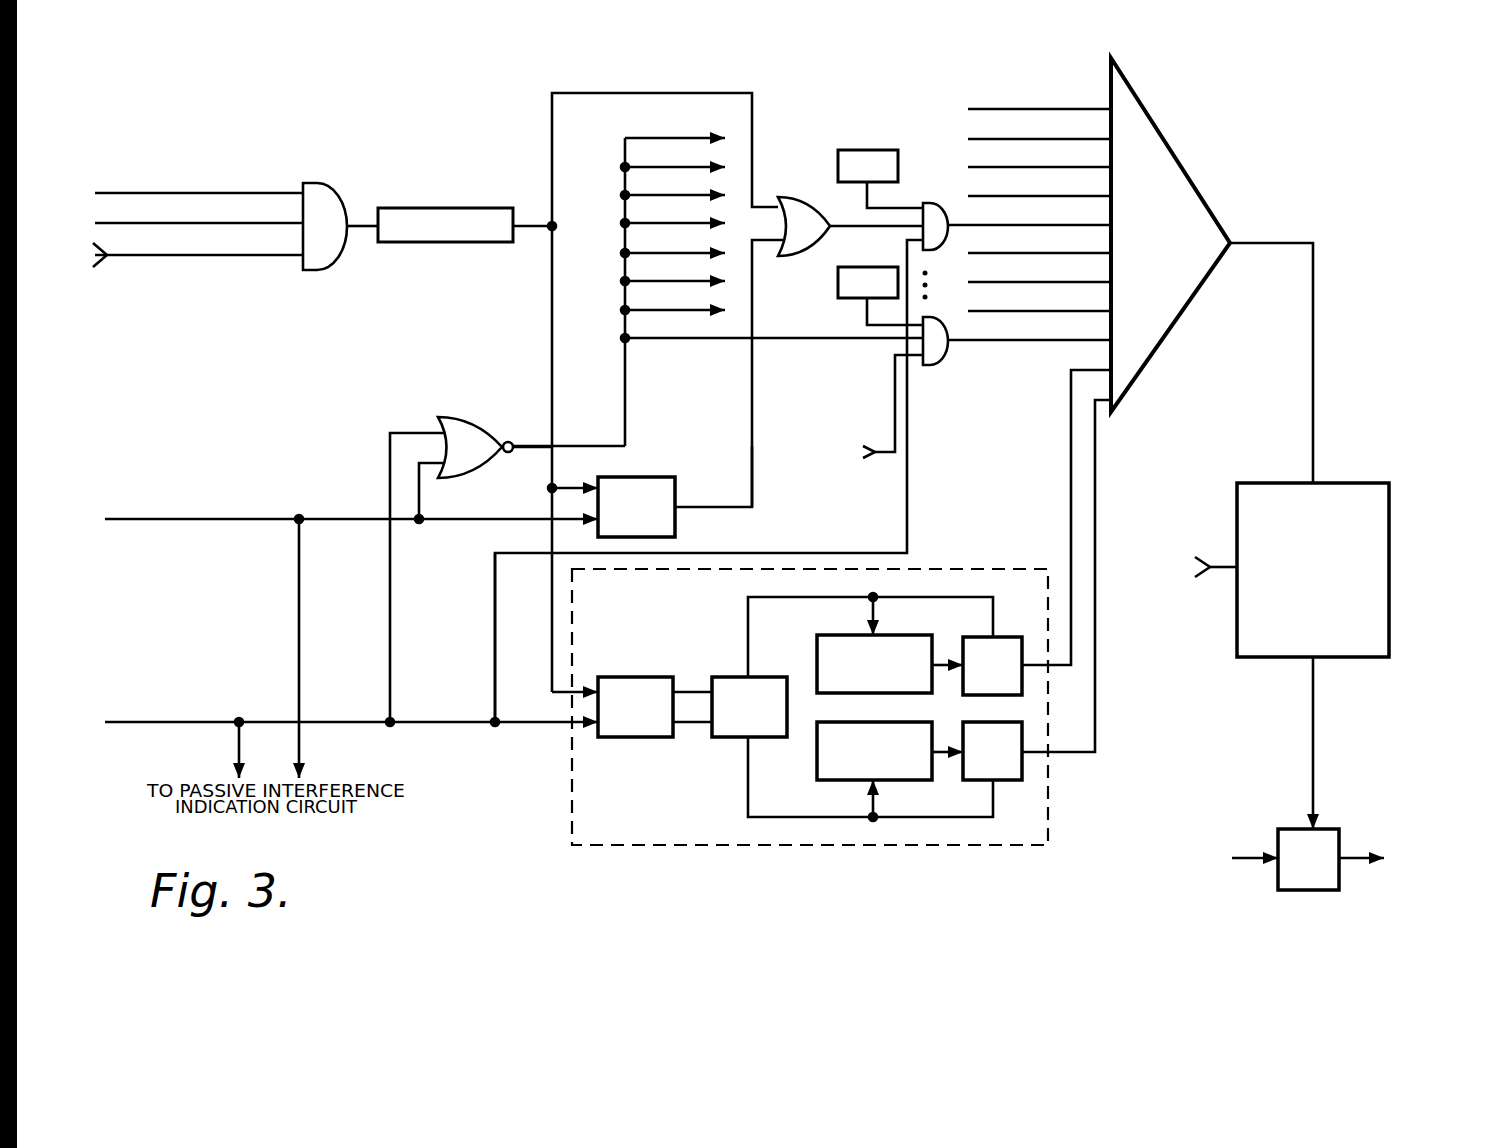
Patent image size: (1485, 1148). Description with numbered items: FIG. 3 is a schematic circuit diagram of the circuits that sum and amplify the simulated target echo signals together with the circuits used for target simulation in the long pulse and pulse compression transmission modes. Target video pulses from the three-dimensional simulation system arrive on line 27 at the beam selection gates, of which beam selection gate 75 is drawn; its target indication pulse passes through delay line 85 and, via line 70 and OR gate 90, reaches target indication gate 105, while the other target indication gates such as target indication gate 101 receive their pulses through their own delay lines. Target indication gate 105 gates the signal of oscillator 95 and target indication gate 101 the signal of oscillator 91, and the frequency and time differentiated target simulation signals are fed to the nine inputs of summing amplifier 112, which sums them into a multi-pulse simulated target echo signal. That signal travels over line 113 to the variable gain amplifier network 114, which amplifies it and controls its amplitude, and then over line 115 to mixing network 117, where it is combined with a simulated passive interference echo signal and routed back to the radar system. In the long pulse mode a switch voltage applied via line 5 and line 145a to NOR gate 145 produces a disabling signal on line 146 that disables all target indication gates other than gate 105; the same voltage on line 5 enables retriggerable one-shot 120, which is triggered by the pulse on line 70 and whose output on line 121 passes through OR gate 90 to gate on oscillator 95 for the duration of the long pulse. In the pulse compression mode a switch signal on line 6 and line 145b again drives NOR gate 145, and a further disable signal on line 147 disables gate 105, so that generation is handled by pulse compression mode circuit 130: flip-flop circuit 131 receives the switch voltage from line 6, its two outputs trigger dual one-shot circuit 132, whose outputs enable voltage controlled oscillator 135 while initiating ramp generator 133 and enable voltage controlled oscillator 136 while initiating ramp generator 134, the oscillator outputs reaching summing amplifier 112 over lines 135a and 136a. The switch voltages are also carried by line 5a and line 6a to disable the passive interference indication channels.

The beam selection gate 75 is at (325, 185).
The delay line 85 is at (443, 208).
The line 27 is at (233, 256).
The line 70 is at (552, 338).
The OR gate 90 is at (808, 197).
The oscillator 95 is at (868, 150).
The oscillator 91 is at (838, 283).
The target indication gate 105 is at (942, 205).
The target indication gate 101 is at (938, 362).
The summing amplifier 112 is at (1180, 165).
The line 113 is at (1268, 243).
The variable gain amplifier network 114 is at (1330, 483).
The line 115 is at (1315, 715).
The mixing network 117 is at (1320, 829).
The retriggerable one-shot 120 is at (645, 477).
The line 121 is at (752, 388).
The NOR gate 145 is at (468, 417).
The line 146 is at (533, 446).
The line 145a is at (419, 490).
The line 145b is at (390, 475).
The line 5 is at (343, 520).
The line 6 is at (343, 660).
The line 5a is at (300, 735).
The line 6a is at (238, 740).
The line 147 is at (495, 628).
The pulse compression mode circuit 130 is at (968, 568).
The flip-flop circuit 131 is at (630, 677).
The dual one-shot circuit 132 is at (737, 677).
The ramp generator 133 is at (850, 635).
The ramp generator 134 is at (835, 780).
The voltage controlled oscillator 135 is at (980, 637).
The voltage controlled oscillator 136 is at (975, 780).
The line 135a is at (1071, 463).
The line 136a is at (1095, 485).